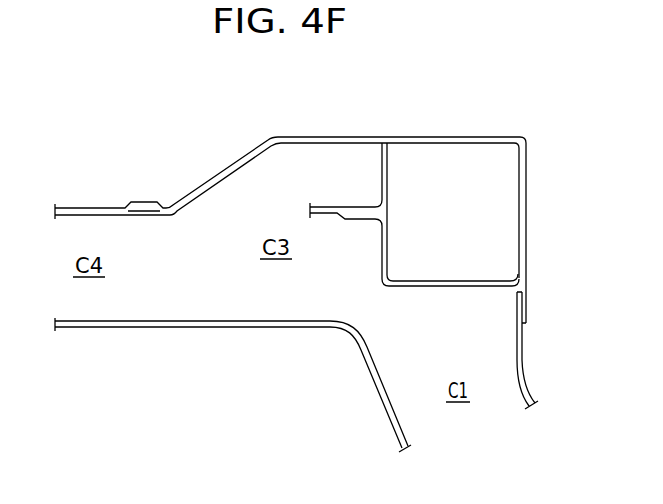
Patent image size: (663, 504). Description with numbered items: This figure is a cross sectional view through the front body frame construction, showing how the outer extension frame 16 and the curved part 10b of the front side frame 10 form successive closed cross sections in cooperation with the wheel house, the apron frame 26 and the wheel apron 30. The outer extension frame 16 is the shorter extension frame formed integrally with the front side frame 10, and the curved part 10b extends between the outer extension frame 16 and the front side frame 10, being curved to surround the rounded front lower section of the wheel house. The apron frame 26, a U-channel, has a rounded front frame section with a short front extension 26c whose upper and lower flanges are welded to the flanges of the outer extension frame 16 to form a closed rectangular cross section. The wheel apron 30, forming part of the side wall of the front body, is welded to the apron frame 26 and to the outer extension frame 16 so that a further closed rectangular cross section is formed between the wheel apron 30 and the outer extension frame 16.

The front side frame 10 is at (537, 391).
The curved part of the front side frame 10b is at (393, 421).
The outer extension frame 16 is at (127, 329).
The apron frame 26 is at (387, 134).
The short front extension of the apron frame 26c is at (321, 136).
The wheel apron 30 is at (92, 208).